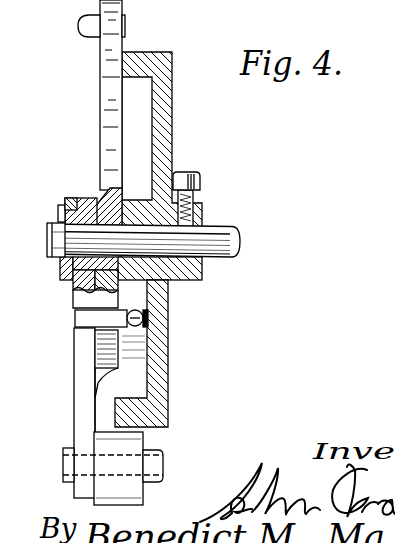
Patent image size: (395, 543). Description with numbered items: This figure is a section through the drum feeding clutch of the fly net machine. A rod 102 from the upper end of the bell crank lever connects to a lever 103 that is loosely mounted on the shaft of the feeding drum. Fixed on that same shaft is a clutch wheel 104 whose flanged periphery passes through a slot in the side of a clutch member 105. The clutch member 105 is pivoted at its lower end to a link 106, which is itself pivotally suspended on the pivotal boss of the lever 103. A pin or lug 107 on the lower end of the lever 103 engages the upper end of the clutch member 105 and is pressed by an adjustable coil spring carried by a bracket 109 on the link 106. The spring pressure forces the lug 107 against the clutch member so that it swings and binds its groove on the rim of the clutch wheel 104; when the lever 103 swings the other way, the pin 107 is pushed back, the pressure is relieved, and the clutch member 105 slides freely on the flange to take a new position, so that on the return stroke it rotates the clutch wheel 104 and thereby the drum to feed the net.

The rod 102 is at (80, 32).
The lever 103 is at (100, 119).
The clutch wheel 104 is at (172, 118).
The clutch member 105 is at (120, 373).
The link 106 is at (80, 398).
The pin or lug 107 is at (113, 309).
The bracket 109 is at (76, 323).